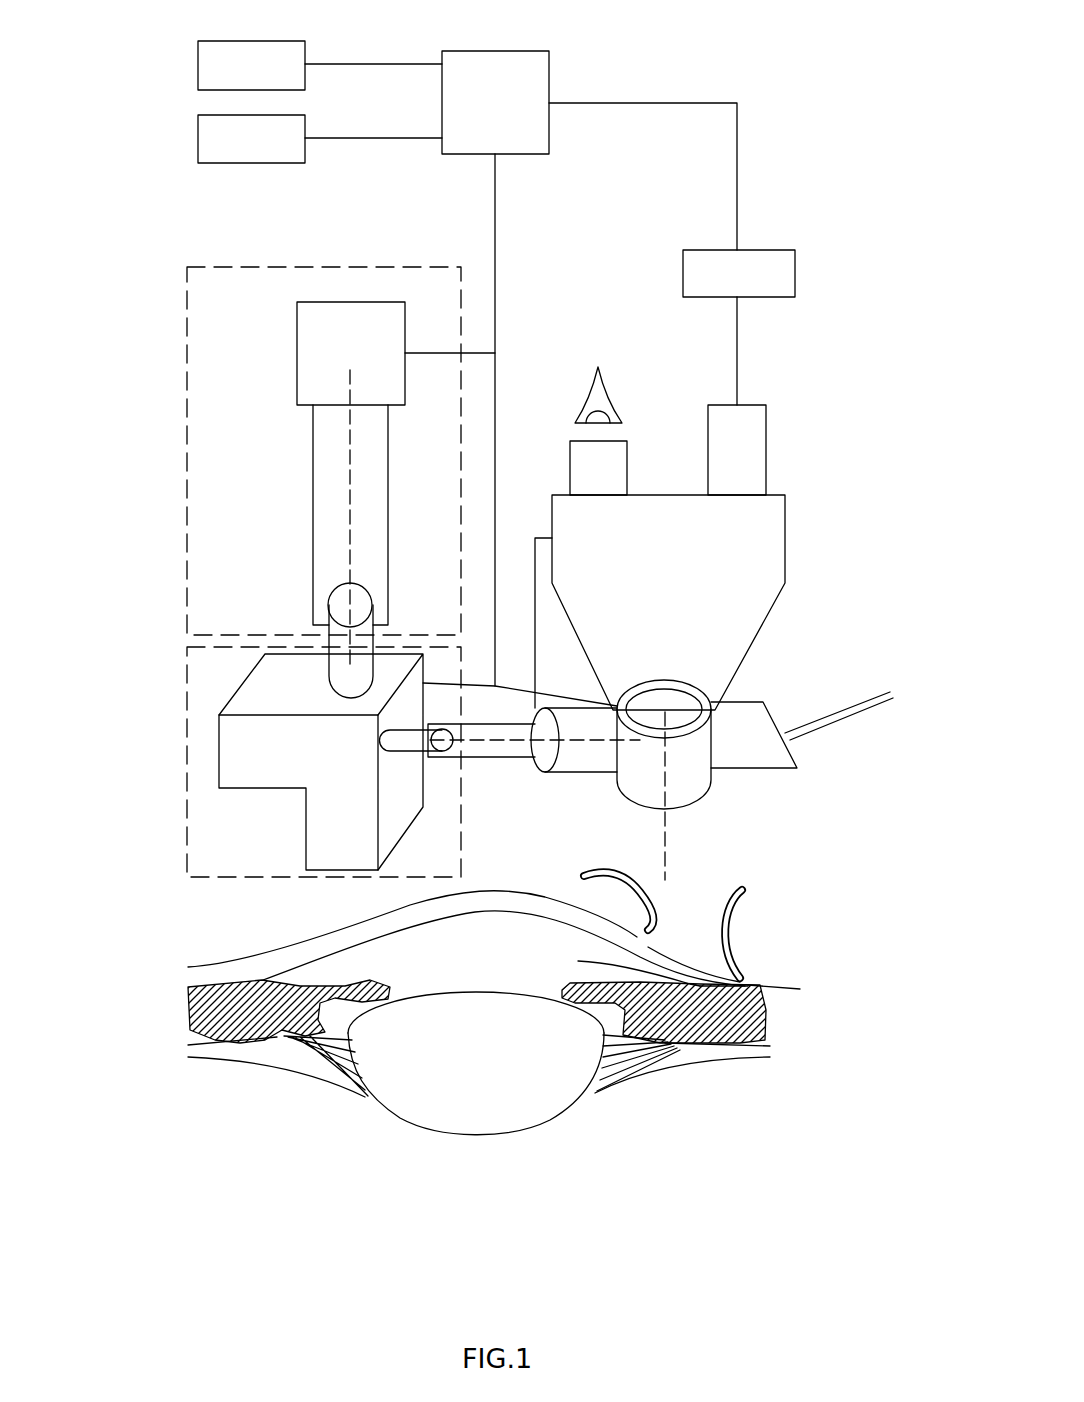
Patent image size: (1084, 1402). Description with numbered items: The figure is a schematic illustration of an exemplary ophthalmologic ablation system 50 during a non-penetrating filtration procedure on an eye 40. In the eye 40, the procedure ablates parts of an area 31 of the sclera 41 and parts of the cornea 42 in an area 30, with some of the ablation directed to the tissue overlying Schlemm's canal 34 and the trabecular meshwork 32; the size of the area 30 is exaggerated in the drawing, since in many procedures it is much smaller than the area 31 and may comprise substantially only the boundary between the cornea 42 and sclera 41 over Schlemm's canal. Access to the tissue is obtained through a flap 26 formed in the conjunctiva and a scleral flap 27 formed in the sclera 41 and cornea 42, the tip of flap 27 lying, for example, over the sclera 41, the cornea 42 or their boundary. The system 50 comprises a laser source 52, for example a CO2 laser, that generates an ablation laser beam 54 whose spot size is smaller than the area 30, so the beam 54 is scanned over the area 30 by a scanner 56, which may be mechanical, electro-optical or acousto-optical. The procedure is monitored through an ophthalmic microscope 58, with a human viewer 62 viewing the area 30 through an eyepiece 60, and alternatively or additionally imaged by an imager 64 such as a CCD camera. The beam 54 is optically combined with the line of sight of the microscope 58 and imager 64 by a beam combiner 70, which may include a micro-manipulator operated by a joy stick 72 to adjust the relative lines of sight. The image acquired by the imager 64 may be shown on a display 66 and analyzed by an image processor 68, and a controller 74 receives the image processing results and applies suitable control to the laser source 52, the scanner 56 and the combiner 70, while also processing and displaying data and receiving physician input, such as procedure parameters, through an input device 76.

The display 66 is at (198, 64).
The input device 76 is at (198, 138).
The controller 74 is at (549, 74).
The image processor 68 is at (795, 272).
The imager 64 is at (766, 448).
The eyepiece 60 is at (627, 468).
The human viewer 62 is at (585, 395).
The ophthalmic microscope 58 is at (675, 559).
The laser source 52 is at (297, 355).
The ablation laser beam 54 is at (350, 520).
The ophthalmologic ablation system 50 is at (188, 452).
The scanner 56 is at (188, 762).
The beam combiner 70 is at (585, 765).
The joy stick 72 is at (832, 710).
The scleral flap 27 is at (617, 862).
The flap 26 is at (728, 928).
The cornea 42 is at (516, 905).
The area 30 is at (575, 930).
The Schlemm's canal 34 is at (580, 960).
The area 31 is at (732, 975).
The sclera 41 is at (760, 986).
The trabecular meshwork 32 is at (705, 1032).
The eye 40 is at (422, 1178).